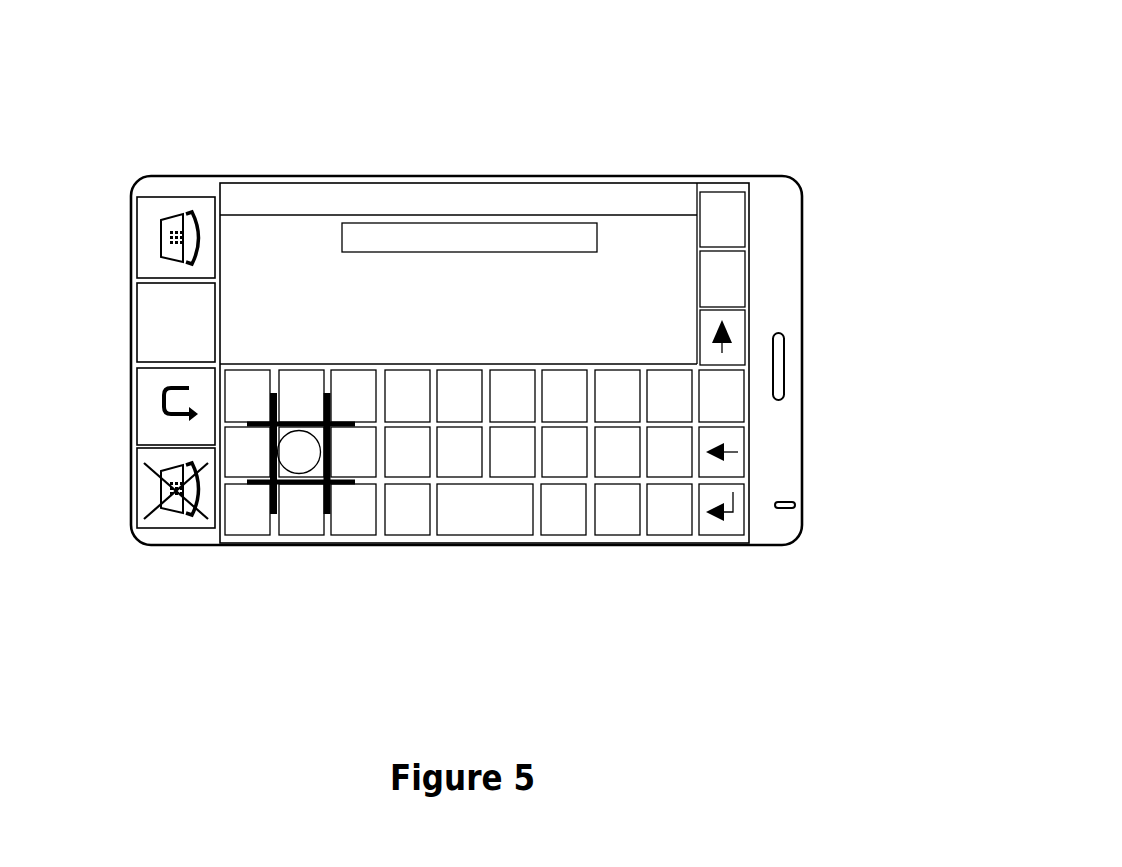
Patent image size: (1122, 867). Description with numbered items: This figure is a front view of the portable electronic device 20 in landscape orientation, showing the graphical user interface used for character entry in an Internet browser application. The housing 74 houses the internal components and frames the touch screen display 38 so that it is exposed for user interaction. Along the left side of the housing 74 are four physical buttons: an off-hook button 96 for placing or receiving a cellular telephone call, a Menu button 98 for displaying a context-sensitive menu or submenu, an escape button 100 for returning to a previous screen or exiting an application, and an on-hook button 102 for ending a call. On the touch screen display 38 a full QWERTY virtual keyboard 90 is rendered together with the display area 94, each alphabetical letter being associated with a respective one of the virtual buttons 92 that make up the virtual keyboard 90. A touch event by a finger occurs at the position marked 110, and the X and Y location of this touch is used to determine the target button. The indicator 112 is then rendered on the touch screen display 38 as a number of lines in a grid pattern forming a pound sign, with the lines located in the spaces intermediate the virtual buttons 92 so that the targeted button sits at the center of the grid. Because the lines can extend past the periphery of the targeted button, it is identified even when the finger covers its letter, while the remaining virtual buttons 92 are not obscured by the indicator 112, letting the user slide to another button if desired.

The portable electronic device 20 is at (775, 92).
The touch screen display 38 is at (747, 438).
The housing 74 is at (703, 542).
The virtual keyboard 90 is at (225, 538).
The virtual buttons 92 is at (562, 510).
The display area 94 is at (697, 200).
The off-hook button 96 is at (150, 238).
The Menu button 98 is at (157, 318).
The escape button 100 is at (152, 407).
The on-hook button 102 is at (150, 485).
The touch event position 110 is at (299, 452).
The indicator 112 is at (273, 514).